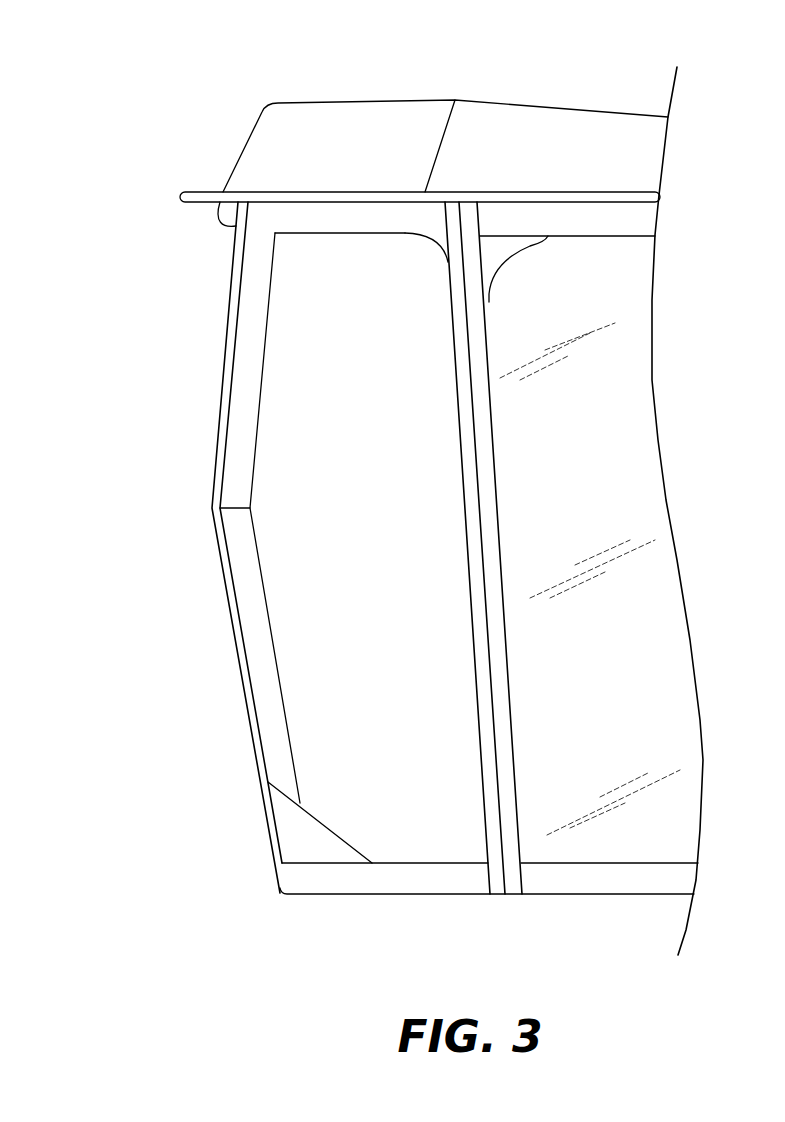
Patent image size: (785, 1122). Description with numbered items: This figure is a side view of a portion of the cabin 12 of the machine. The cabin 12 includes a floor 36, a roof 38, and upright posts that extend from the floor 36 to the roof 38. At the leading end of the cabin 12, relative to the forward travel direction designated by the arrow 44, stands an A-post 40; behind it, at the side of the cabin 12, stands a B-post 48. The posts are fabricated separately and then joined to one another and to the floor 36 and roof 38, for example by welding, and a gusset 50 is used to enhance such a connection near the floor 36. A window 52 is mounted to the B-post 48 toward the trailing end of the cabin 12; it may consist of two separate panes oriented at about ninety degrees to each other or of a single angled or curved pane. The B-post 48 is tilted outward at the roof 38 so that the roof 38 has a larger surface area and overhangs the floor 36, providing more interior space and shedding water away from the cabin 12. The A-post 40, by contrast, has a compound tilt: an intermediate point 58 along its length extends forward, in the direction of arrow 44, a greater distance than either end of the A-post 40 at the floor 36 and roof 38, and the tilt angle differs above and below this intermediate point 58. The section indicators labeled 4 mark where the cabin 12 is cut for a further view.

The cabin 12 is at (90, 104).
The arrow 44 is at (413, 66).
The A-post 40 is at (233, 327).
The intermediate point 58 is at (212, 508).
The section line 4- 4 is at (436, 518).
The B-post 48 is at (492, 524).
The roof 38 is at (570, 236).
The window 52 is at (652, 721).
The gusset 50 is at (312, 838).
The floor 36 is at (567, 862).